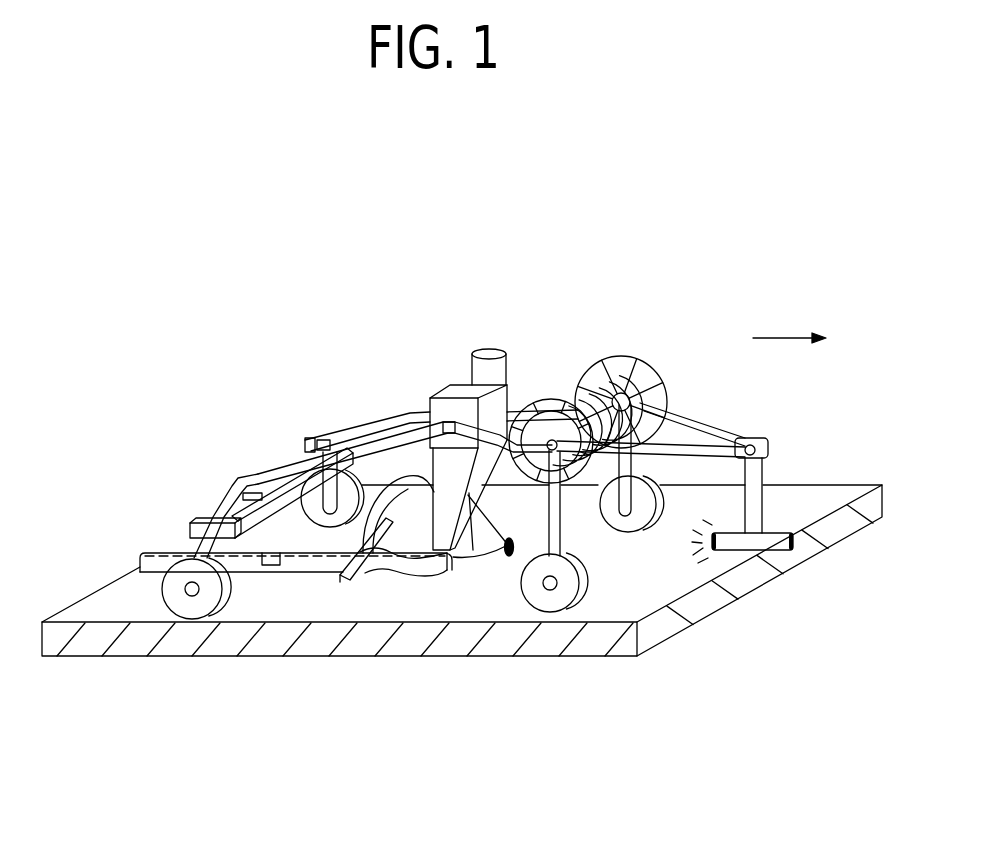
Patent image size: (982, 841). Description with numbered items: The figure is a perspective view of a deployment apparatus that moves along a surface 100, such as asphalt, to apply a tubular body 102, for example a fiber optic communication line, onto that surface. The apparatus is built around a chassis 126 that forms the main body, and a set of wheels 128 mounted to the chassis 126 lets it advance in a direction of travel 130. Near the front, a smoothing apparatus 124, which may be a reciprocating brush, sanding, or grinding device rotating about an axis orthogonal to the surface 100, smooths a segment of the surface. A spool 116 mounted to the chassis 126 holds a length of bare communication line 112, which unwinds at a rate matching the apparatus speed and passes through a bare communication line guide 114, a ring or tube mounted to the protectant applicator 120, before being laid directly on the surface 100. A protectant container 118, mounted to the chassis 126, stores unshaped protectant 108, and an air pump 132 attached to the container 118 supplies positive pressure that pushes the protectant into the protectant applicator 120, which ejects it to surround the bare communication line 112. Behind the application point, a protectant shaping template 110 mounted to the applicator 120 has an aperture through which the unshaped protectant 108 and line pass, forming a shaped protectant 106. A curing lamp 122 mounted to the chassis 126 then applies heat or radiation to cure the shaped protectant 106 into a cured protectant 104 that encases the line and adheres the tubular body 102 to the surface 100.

The surface 100 is at (606, 608).
The tubular body 102 is at (168, 555).
The cured protectant 104 is at (157, 563).
The shaped protectant 106 is at (315, 565).
The unshaped protectant 108 is at (400, 562).
The protectant shaping template 110 is at (363, 560).
The bare communication line 112 is at (472, 552).
The bare communication line guide 114 is at (507, 553).
The spool 116 is at (617, 393).
The protectant container 118 is at (458, 390).
The protectant applicator 120 is at (445, 463).
The curing lamp 122 is at (272, 498).
The smoothing apparatus 124 is at (767, 553).
The chassis 126 is at (648, 448).
The wheels 128 is at (561, 597).
The direction of travel 130 is at (771, 338).
The air pump 132 is at (487, 350).